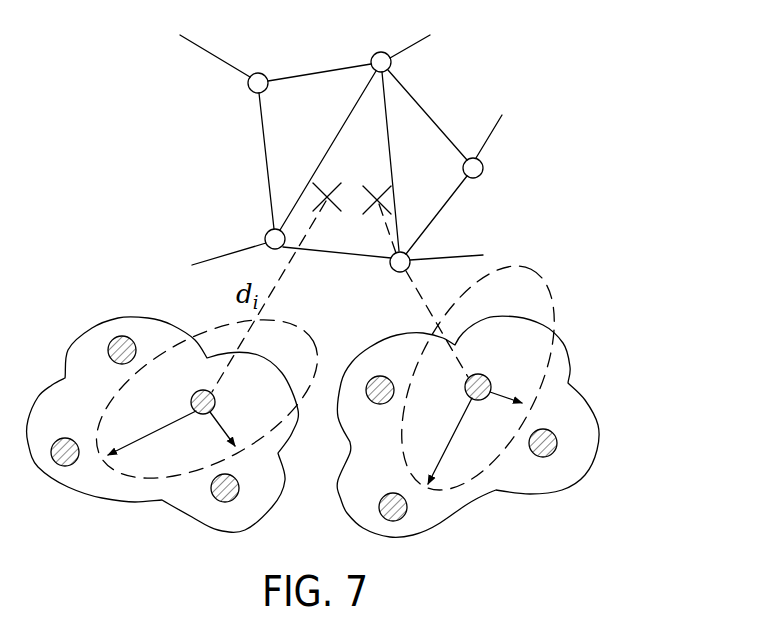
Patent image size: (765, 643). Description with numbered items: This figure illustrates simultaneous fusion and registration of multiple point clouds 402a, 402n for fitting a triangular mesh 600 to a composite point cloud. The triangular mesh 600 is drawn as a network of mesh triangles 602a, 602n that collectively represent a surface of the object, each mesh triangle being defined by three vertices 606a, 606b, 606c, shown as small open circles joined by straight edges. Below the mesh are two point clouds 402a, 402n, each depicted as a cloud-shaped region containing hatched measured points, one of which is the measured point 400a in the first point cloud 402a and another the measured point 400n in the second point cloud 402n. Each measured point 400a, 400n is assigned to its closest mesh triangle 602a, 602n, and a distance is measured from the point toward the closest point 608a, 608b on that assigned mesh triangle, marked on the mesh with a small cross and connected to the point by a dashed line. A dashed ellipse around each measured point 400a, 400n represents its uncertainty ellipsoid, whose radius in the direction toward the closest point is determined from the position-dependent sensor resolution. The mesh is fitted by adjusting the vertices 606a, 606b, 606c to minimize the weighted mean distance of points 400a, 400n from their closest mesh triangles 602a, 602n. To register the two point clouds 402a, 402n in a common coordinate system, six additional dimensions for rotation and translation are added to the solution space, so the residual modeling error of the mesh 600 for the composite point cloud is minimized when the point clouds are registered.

The triangular mesh V 600 is at (379, 137).
The mesh triangle 602a is at (330, 140).
The mesh triangle 602n is at (456, 191).
The vertex 606a is at (266, 235).
The vertex 606b is at (410, 257).
The vertex 606c is at (381, 52).
The closest point on assigned mesh triangle 608a is at (318, 197).
The closest point on assigned mesh triangle 608b is at (383, 200).
The measured point Pi 400a is at (201, 389).
The measured point Pi 400n is at (468, 377).
The point cloud 402a is at (90, 497).
The point cloud 402n is at (437, 530).